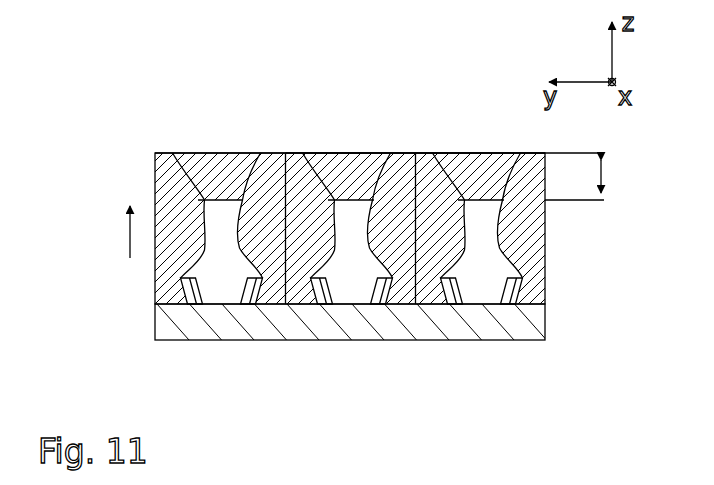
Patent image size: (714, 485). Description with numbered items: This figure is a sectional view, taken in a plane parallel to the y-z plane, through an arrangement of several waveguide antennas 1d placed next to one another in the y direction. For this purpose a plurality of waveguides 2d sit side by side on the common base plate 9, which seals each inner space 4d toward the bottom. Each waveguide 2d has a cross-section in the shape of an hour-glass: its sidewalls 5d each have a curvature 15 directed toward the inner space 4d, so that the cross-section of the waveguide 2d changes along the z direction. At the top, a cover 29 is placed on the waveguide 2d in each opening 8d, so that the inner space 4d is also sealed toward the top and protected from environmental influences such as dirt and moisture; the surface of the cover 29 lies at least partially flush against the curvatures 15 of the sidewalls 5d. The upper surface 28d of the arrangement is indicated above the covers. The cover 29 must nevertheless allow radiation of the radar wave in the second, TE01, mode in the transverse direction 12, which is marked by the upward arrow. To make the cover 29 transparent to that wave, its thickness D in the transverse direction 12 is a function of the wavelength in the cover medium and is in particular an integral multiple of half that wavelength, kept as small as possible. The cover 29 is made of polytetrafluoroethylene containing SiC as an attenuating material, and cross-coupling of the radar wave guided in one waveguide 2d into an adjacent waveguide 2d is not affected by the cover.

The waveguide antenna 1d is at (239, 131).
The waveguide 2d is at (153, 190).
The inner space 4d is at (223, 278).
The sidewall 5d is at (165, 266).
The opening 8d is at (202, 198).
The base plate 9 is at (350, 332).
The transverse direction 12 is at (128, 237).
The curvature 15 is at (236, 204).
The top surface 28d is at (397, 111).
The cover 29 is at (327, 154).
The thickness D is at (574, 176).